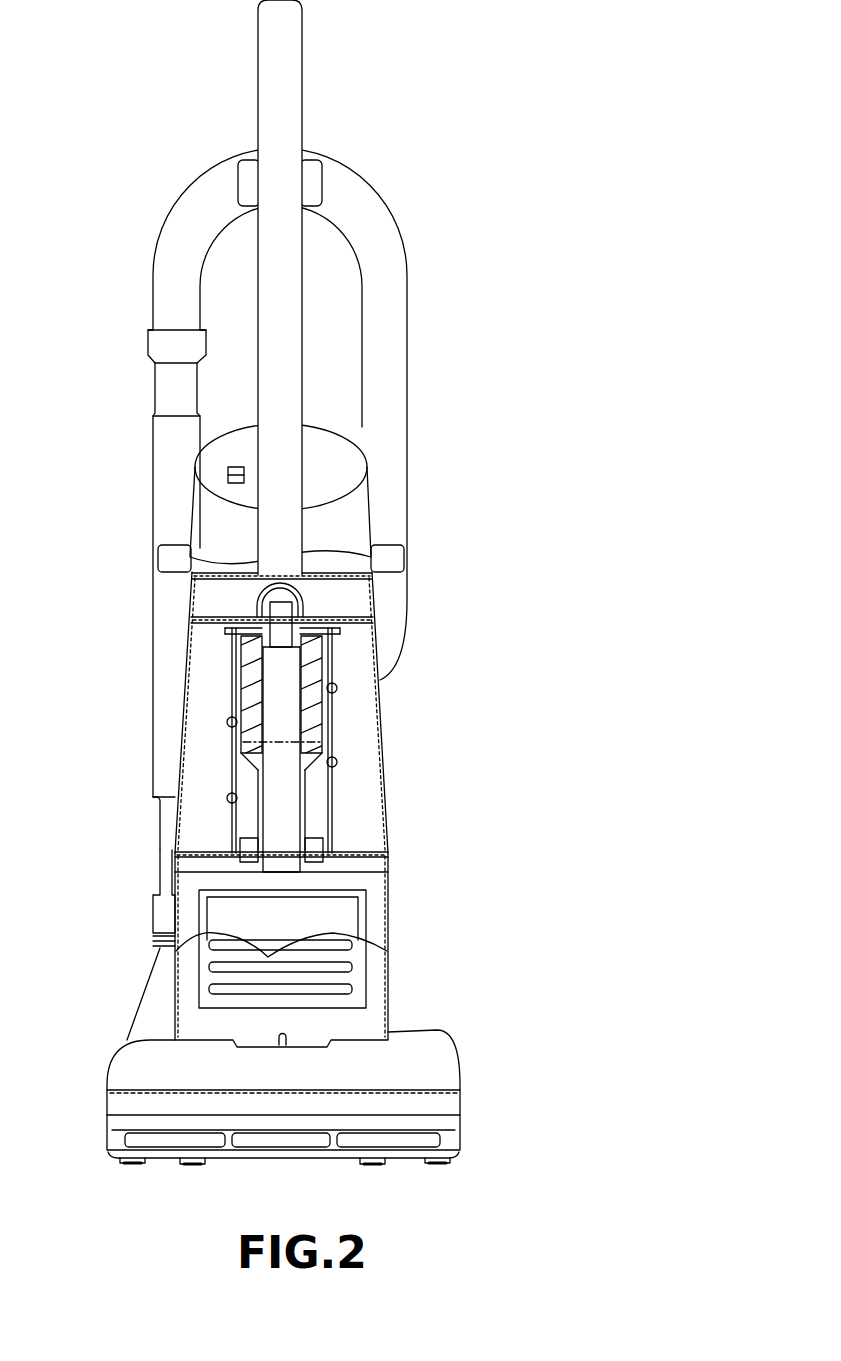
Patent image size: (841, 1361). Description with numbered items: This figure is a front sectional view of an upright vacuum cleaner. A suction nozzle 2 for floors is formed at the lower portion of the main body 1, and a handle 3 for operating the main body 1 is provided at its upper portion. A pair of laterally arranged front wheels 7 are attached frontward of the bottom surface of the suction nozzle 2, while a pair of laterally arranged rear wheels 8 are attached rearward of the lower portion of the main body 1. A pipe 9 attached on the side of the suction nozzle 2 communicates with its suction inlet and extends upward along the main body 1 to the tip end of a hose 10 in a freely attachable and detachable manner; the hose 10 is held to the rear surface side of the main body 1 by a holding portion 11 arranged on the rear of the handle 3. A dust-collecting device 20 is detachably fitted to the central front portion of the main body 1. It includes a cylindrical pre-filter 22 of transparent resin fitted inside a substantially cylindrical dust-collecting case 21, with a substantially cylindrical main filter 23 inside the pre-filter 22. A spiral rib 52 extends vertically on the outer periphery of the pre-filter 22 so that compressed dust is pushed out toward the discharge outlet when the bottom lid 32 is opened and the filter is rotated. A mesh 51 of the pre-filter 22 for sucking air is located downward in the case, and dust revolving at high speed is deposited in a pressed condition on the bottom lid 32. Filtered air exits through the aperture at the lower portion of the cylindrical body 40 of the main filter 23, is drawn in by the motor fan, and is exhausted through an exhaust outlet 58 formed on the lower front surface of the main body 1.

The main body 1 is at (130, 655).
The suction nozzle 2 is at (440, 1062).
The handle 3 is at (273, 116).
The front wheels 7 is at (128, 1160).
The rear wheels 8 is at (190, 1165).
The pipe 9 is at (172, 598).
The hose 10 is at (393, 465).
The holding portion 11 is at (318, 172).
The dust-collecting device 20 is at (405, 800).
The dust-collecting case 21 is at (387, 733).
The pre-filter 22 is at (331, 703).
The main filter 23 is at (283, 667).
The bottom lid 32 is at (368, 852).
The cylindrical body 40 is at (281, 819).
The mesh 51 is at (331, 778).
The spiral rib 52 is at (230, 798).
The exhaust outlet 58 is at (348, 967).